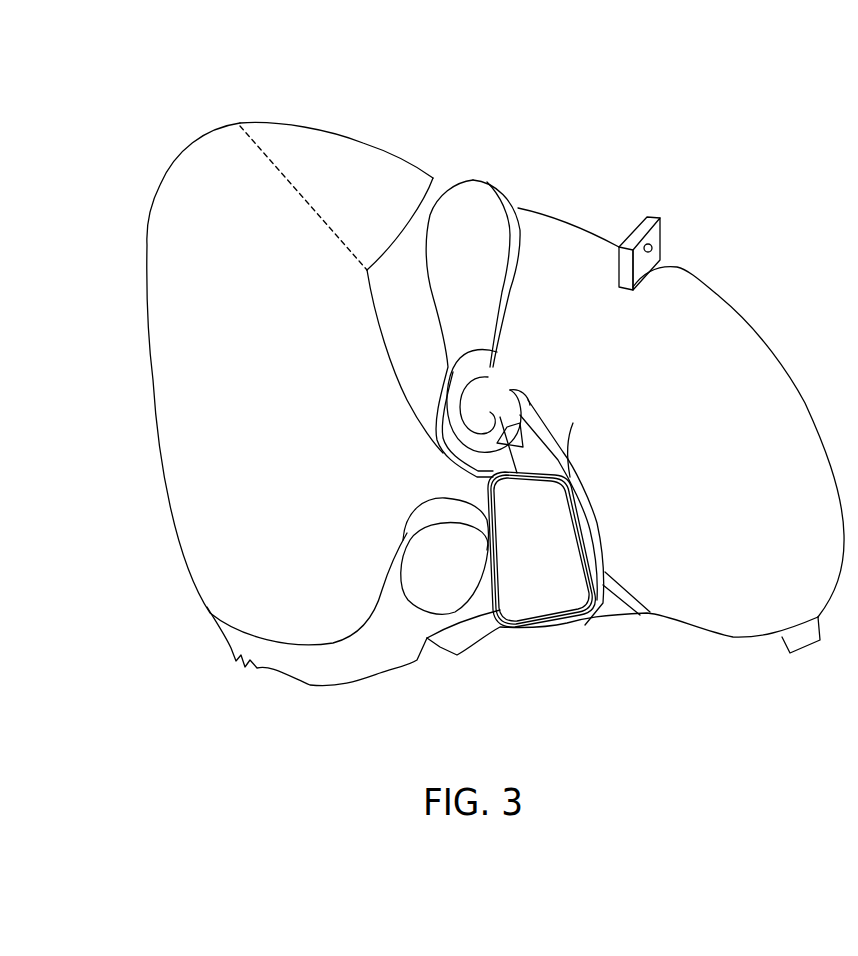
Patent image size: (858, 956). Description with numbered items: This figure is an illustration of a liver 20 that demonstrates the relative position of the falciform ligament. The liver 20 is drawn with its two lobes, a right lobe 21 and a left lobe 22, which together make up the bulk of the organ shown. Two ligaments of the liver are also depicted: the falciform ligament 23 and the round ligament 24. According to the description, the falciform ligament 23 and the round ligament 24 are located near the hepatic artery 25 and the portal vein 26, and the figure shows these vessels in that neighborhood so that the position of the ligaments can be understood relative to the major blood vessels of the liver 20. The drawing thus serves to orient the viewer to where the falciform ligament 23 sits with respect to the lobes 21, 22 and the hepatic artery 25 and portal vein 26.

The liver 20 is at (127, 123).
The right lobe 21 is at (247, 492).
The left lobe 22 is at (765, 430).
The falciform ligament 23 is at (653, 248).
The round ligament 24 is at (645, 222).
The hepatic artery 25 is at (527, 420).
The portal vein 26 is at (573, 423).